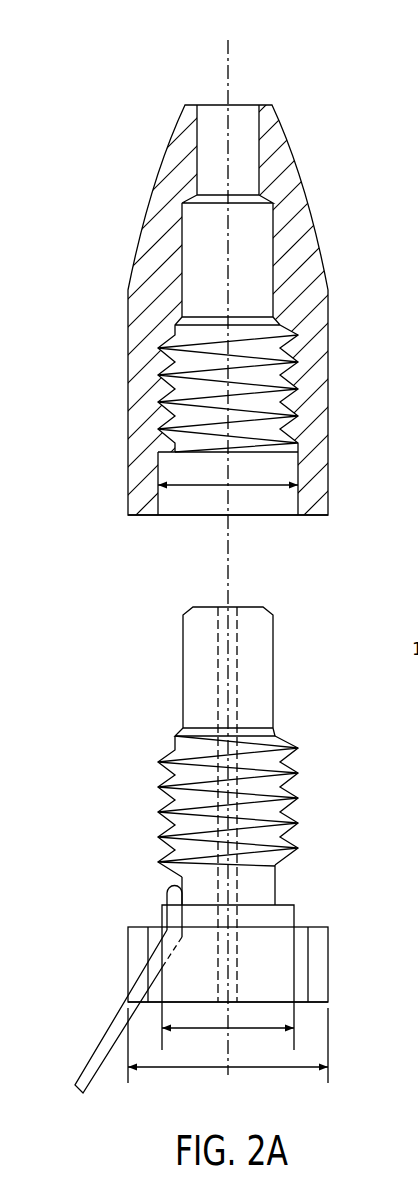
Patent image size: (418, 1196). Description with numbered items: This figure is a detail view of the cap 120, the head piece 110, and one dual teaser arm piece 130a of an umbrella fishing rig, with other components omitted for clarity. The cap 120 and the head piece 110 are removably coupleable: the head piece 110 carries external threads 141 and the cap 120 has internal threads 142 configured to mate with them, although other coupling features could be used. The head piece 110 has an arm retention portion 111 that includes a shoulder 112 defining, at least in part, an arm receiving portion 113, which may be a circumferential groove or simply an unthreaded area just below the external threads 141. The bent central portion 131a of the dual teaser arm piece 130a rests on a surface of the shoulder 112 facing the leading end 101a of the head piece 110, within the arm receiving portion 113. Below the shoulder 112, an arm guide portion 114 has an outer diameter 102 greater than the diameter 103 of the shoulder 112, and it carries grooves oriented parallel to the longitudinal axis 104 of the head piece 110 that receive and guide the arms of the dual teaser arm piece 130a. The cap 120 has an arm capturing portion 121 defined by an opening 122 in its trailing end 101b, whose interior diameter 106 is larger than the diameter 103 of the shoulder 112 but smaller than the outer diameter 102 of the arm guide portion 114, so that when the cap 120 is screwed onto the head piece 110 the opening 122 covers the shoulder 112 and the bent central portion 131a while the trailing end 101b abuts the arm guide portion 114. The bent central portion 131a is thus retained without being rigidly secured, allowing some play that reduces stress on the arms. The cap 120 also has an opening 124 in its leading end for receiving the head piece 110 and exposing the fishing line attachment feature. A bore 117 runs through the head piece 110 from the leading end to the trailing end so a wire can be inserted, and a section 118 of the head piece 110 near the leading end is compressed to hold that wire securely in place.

The leading end 101a is at (348, 120).
The trailing end 101b is at (350, 1012).
The outer diameter 102 is at (188, 1070).
The diameter of the shoulder 103 is at (233, 1032).
The longitudinal axis 104 is at (228, 722).
The interior diameter 106 is at (210, 487).
The head piece 110 is at (105, 680).
The arm retention portion 111 is at (112, 815).
The shoulder 112 is at (295, 915).
The arm receiving portion 113 is at (295, 888).
The arm guide portion 114 is at (116, 978).
The bore 117 is at (237, 640).
The compression section 118 is at (273, 683).
The cap 120 is at (135, 130).
The arm capturing portion 121 is at (150, 538).
The opening 122 is at (270, 512).
The opening in the leading end of the cap 124 is at (248, 95).
The dual teaser arm piece 130a is at (85, 1035).
The bent central portion 131a is at (155, 897).
The external threads 141 is at (310, 783).
The internal threads 142 is at (305, 395).